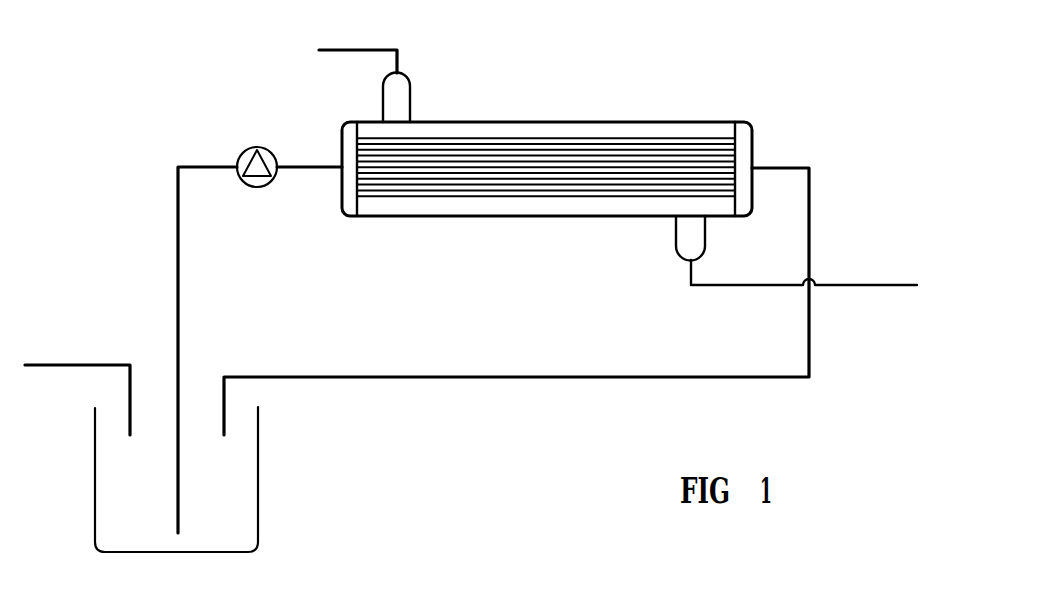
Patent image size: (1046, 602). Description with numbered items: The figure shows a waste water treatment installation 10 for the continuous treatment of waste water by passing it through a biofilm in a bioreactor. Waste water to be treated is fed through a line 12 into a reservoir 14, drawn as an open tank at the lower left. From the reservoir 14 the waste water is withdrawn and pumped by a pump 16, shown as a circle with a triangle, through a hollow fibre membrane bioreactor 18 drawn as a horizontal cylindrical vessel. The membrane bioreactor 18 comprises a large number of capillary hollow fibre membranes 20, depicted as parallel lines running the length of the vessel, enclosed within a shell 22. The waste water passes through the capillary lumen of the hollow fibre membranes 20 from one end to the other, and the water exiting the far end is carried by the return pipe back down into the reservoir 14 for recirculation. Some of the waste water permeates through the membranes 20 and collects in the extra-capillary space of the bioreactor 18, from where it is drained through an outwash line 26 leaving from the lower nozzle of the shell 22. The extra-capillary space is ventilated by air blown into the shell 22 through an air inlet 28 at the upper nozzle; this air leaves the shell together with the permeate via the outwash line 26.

The waste water treatment installation 10 is at (778, 90).
The line 12 is at (75, 362).
The reservoir 14 is at (258, 497).
The pump 16 is at (240, 153).
The hollow fibre membrane bioreactor 18 is at (547, 184).
The hollow fibre membranes 20 is at (542, 142).
The shell 22 is at (647, 120).
The outwash line 26 is at (862, 288).
The air inlet 28 is at (343, 48).